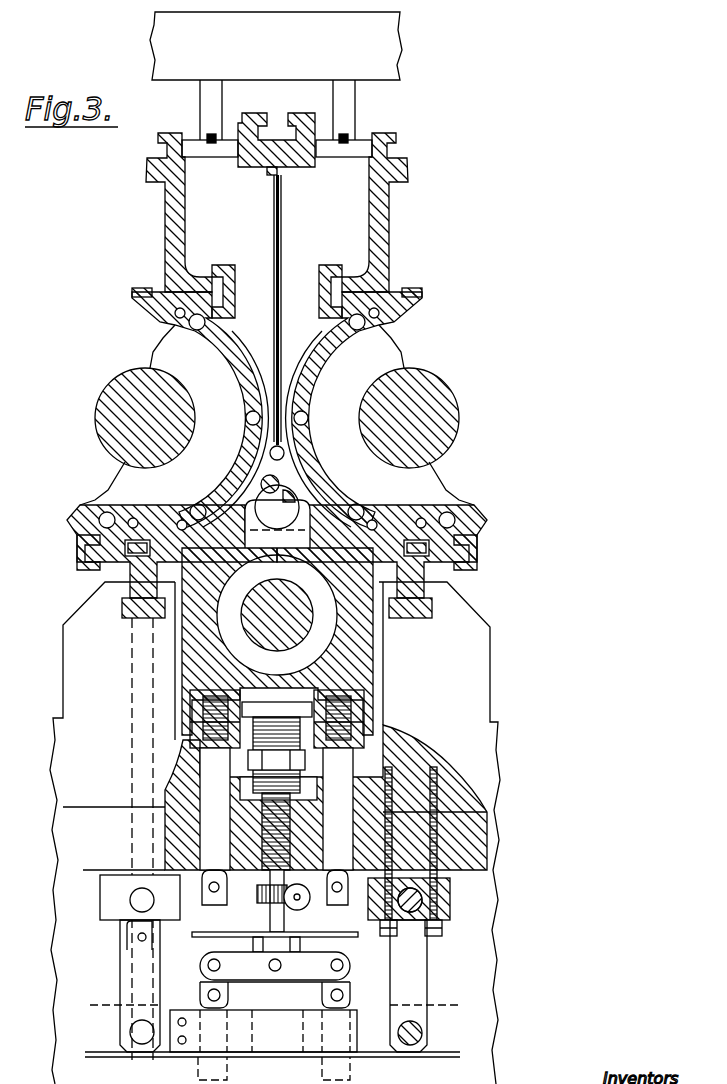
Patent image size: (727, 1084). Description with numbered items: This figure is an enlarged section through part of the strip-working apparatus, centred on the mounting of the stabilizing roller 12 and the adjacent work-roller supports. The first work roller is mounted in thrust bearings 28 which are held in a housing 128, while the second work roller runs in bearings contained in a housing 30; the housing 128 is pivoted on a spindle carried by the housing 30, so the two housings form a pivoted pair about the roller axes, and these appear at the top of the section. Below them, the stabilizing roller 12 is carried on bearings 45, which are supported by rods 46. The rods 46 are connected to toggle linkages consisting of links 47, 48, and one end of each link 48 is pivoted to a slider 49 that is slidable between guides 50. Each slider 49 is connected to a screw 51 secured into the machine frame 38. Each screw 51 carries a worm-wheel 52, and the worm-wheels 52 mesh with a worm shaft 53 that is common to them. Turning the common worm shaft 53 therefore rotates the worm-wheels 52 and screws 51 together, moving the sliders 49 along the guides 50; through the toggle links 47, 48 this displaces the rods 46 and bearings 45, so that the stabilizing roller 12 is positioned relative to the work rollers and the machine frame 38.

The stabilizing roller 12 is at (362, 659).
The thrust bearings 28 is at (262, 482).
The housing 128 is at (300, 482).
The housing 30 is at (300, 500).
The machine frame 38 is at (292, 789).
The bearings 45 is at (365, 718).
The rods 46 is at (347, 767).
The link 47 is at (207, 912).
The link 48 is at (205, 968).
The slider 49 is at (280, 945).
The guides 50 is at (255, 993).
The screw 51 is at (274, 783).
The worm-wheel 52 is at (262, 899).
The worm shaft 53 is at (304, 905).